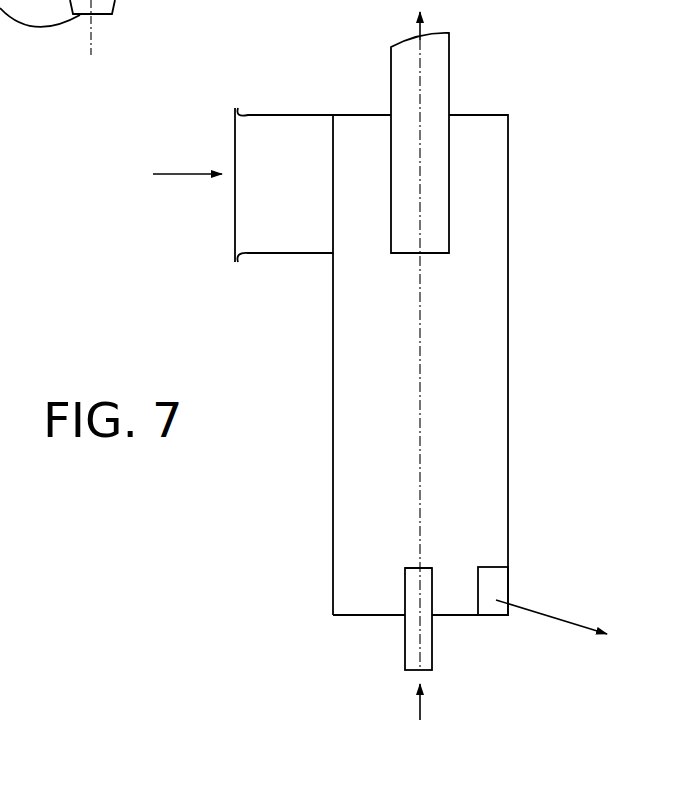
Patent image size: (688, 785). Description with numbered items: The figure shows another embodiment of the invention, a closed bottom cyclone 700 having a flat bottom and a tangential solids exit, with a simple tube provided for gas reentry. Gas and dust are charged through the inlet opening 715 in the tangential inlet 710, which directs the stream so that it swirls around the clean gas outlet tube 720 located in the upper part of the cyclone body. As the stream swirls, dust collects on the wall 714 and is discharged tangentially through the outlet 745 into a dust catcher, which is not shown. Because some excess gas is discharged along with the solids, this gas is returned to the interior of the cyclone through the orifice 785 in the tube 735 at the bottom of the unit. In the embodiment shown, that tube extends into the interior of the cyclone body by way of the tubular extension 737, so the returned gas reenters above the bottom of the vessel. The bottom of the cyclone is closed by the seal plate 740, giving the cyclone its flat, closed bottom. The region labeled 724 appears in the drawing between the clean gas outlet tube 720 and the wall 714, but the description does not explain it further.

The closed bottom cyclone 700 is at (523, 322).
The tangential inlet 710 is at (292, 254).
The wall 714 is at (508, 378).
The inlet opening 715 is at (235, 198).
The clean gas outlet tube 720 is at (449, 68).
The annular space 724 is at (497, 196).
The tube 735 is at (432, 640).
The tubular extension 737 is at (432, 582).
The seal plate 740 is at (365, 617).
The outlet 745 is at (497, 593).
The orifice 785 is at (412, 672).